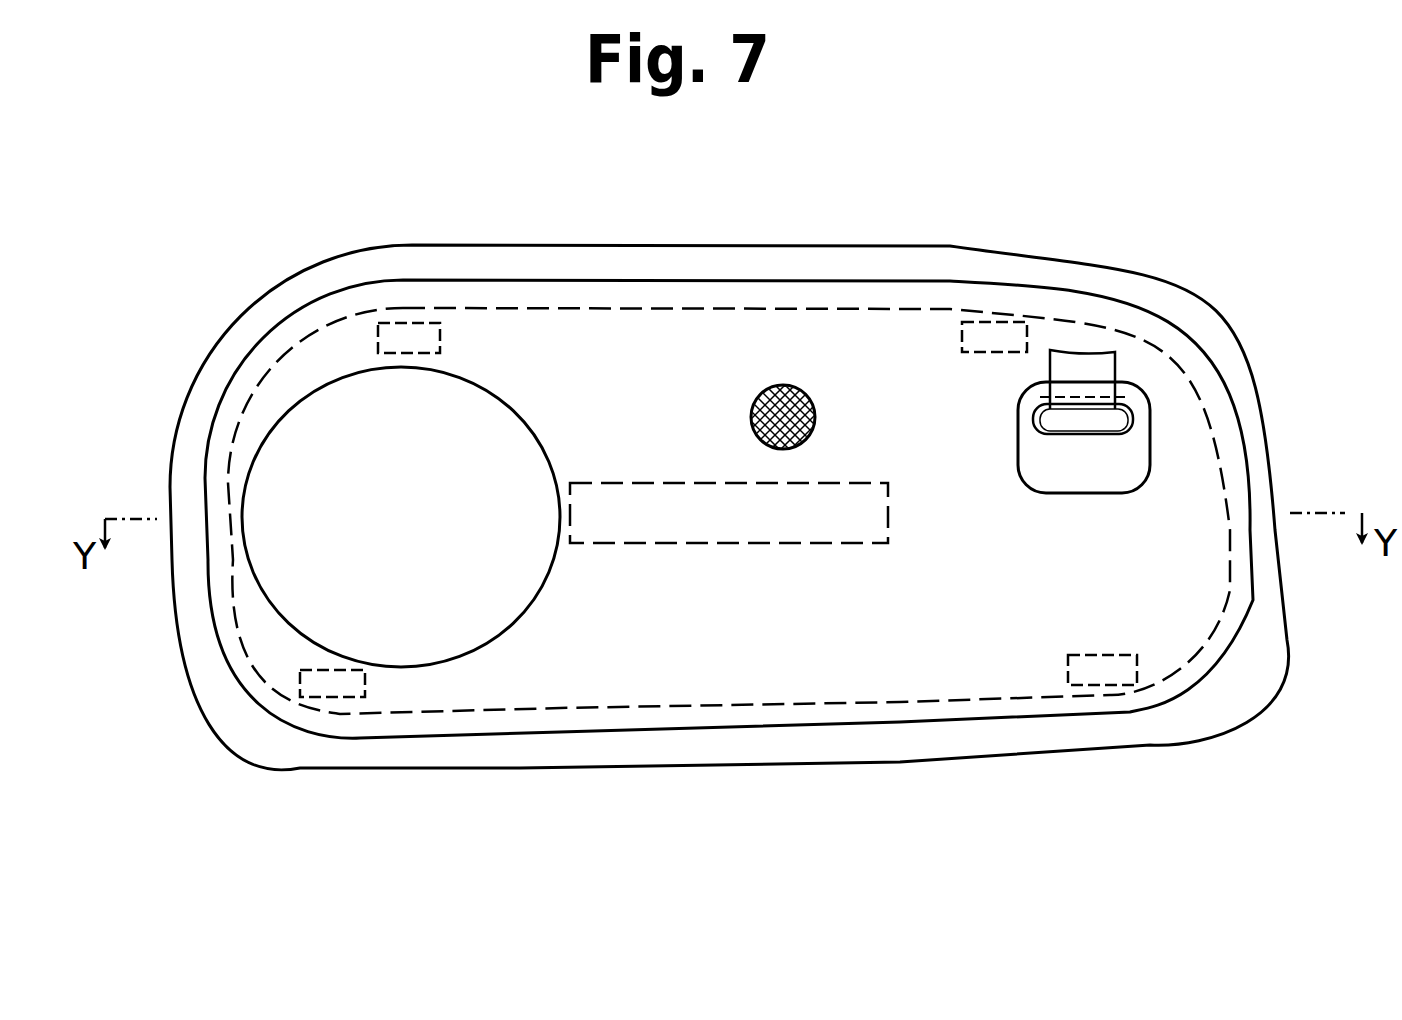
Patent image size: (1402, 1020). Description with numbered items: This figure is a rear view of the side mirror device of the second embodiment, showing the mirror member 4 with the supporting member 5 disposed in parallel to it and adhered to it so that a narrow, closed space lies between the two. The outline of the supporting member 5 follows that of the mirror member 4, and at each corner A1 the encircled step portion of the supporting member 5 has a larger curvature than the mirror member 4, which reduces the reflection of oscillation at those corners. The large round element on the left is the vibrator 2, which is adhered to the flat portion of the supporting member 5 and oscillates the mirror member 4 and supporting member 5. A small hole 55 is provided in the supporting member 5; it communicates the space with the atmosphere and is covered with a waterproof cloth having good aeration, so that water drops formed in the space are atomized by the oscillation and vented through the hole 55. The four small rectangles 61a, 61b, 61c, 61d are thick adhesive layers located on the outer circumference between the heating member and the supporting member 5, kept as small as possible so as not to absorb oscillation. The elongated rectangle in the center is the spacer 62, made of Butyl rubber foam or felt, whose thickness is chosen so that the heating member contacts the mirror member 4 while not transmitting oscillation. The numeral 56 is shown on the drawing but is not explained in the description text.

The vibrator 2 is at (270, 577).
The mirror member 4 is at (1280, 707).
The supporting member 5 is at (1203, 608).
The small hole 55 is at (1128, 468).
The microphone hole 56 is at (800, 395).
The thick adhesive layer 61a is at (1003, 335).
The thick adhesive layer 61b is at (412, 335).
The thick adhesive layer 61c is at (343, 697).
The thick adhesive layer 61d is at (1100, 676).
The spacer 62 is at (790, 537).
The corner A1 is at (272, 330).